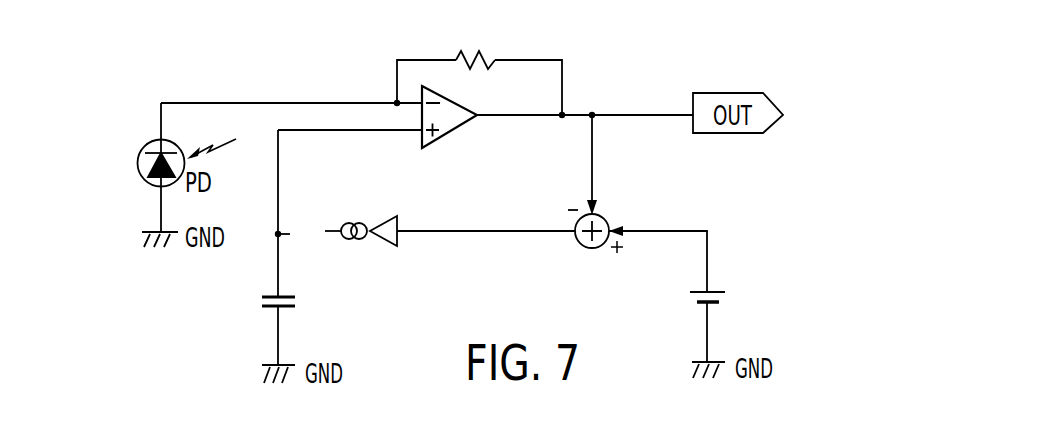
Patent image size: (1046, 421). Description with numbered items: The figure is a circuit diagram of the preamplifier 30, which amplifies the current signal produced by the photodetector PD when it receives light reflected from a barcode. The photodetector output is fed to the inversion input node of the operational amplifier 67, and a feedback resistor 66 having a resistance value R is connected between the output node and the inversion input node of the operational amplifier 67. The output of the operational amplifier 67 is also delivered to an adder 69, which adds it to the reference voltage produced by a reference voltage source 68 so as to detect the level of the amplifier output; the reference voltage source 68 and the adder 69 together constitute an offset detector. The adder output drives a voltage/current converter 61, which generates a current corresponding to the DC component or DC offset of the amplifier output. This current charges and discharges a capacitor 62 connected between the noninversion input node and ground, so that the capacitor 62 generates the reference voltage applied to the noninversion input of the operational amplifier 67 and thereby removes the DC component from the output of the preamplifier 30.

The preamplifier 30 is at (645, 65).
The voltage/current converter 61 is at (369, 250).
The capacitor 62 is at (261, 304).
The feedback resistor 66 is at (476, 50).
The operational amplifier 67 is at (438, 149).
The reference voltage source 68 is at (716, 287).
The adder 69 is at (605, 218).